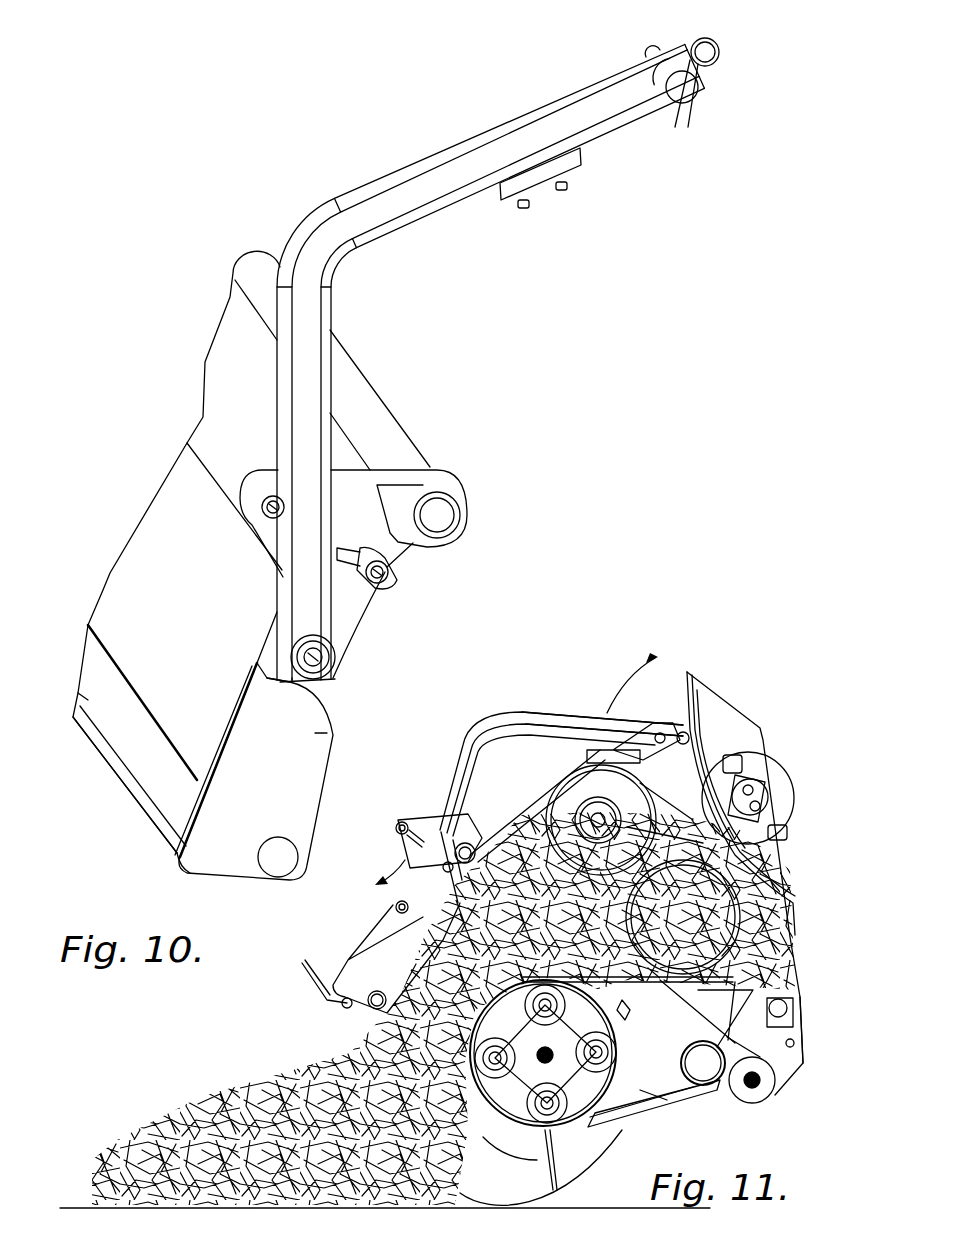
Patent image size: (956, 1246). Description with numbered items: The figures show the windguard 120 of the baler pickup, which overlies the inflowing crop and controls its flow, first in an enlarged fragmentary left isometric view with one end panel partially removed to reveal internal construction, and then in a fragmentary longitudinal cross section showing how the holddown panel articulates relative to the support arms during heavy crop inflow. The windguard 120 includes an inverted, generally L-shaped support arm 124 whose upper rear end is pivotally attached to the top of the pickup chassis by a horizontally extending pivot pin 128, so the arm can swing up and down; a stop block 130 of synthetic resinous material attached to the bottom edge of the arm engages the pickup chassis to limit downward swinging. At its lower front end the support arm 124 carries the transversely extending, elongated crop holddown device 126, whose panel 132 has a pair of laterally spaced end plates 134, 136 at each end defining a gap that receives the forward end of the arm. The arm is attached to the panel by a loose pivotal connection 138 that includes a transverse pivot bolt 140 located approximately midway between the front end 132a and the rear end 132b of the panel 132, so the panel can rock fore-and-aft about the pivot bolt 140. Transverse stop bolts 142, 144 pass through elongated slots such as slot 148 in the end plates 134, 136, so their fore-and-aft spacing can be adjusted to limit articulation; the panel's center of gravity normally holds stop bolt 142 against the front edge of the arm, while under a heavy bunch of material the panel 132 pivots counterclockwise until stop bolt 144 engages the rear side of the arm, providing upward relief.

In FIG. 10, the windguard 120 is at (292, 212).
In FIG. 11, the windguard 120 is at (498, 712).
In FIG. 10, the support arm 124 is at (487, 157).
In FIG. 11, the support arm 124 is at (542, 723).
In FIG. 10, the crop holddown device 126 is at (87, 673).
In FIG. 10, the pivot pin 128 is at (694, 100).
In FIG. 11, the pivot pin 128 is at (687, 672).
In FIG. 10, the stop block 130 is at (542, 178).
In FIG. 10, the panel 132 is at (120, 602).
In FIG. 11, the panel 132 is at (357, 967).
In FIG. 10, the front end of panel 132a is at (185, 870).
In FIG. 10, the rear end of panel 132b is at (343, 373).
In FIG. 10, the end plate 134 is at (373, 477).
In FIG. 10, the end plate 136 is at (327, 732).
In FIG. 10, the loose pivotal connection 138 is at (302, 637).
In FIG. 11, the loose pivotal connection 138 is at (395, 907).
In FIG. 10, the pivot bolt 140 is at (322, 658).
In FIG. 10, the stop bolt 142 is at (266, 508).
In FIG. 11, the stop bolt 142 is at (400, 824).
In FIG. 10, the stop bolt 144 is at (386, 574).
In FIG. 11, the stop bolt 144 is at (440, 855).
In FIG. 10, the elongated slot 148 is at (340, 551).